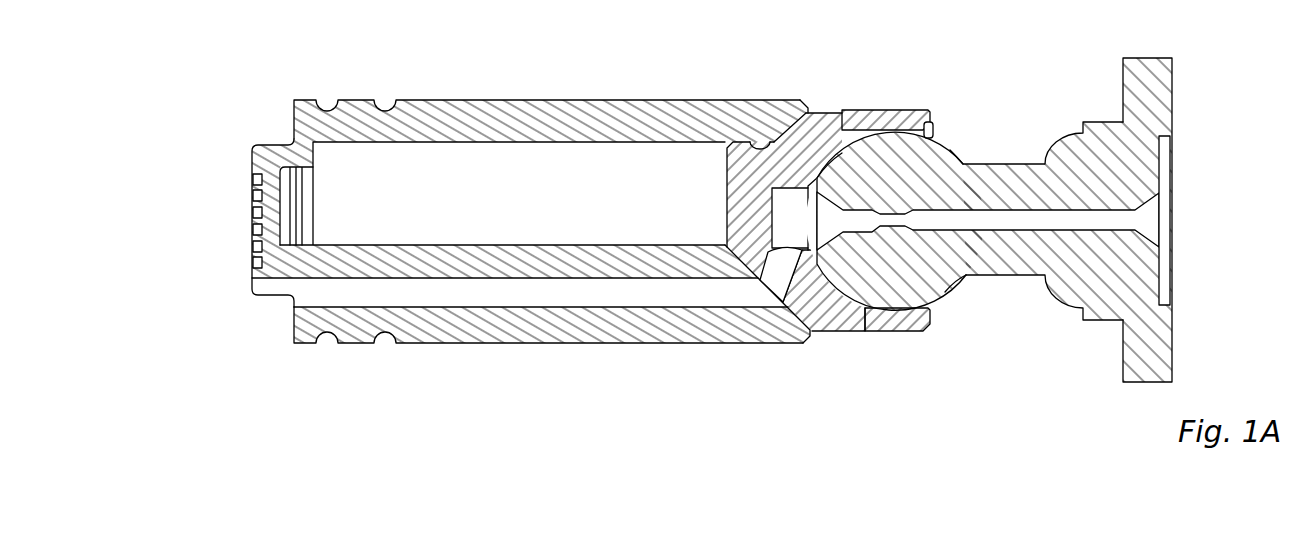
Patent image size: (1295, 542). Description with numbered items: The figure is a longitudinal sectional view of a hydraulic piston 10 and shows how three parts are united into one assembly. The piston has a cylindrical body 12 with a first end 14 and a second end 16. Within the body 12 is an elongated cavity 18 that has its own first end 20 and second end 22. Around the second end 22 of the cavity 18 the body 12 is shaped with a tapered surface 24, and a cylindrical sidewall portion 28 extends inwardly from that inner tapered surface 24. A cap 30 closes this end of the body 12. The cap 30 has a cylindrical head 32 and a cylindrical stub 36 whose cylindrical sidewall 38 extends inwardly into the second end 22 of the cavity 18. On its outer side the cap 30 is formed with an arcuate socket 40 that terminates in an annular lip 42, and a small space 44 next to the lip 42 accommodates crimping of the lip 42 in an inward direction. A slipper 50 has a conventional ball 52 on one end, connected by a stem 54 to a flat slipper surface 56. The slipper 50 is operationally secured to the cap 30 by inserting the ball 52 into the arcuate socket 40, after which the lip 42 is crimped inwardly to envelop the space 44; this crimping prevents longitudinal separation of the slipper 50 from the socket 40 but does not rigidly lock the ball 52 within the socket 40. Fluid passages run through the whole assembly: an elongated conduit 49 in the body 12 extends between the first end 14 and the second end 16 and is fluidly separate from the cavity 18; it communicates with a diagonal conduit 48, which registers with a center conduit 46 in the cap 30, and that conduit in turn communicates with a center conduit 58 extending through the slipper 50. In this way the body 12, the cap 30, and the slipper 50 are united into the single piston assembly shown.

The hydraulic piston 10 is at (534, 64).
The cylindrical body 12 is at (626, 98).
The first end 14 is at (254, 146).
The second end 16 is at (812, 340).
The elongated cavity 18 is at (445, 162).
The first end 20 is at (311, 198).
The second end 22 is at (847, 113).
The tapered surface 24 is at (823, 115).
The cylindrical sidewall portion 28 is at (776, 138).
The cap 30 is at (934, 108).
The cylindrical head 32 is at (880, 108).
The cylindrical stub 36 is at (740, 170).
The cylindrical sidewall 38 is at (757, 140).
The arcuate socket 40 is at (857, 292).
The annular lip 42 is at (931, 122).
The small space 44 is at (940, 318).
The center conduit 46 is at (782, 202).
The diagonal conduit 48 is at (770, 275).
The elongated conduit 49 is at (528, 297).
The slipper 50 is at (1178, 100).
The ball 52 is at (950, 290).
The stem 54 is at (1022, 278).
The flat slipper surface 56 is at (1173, 65).
The center conduit 58 is at (1044, 212).